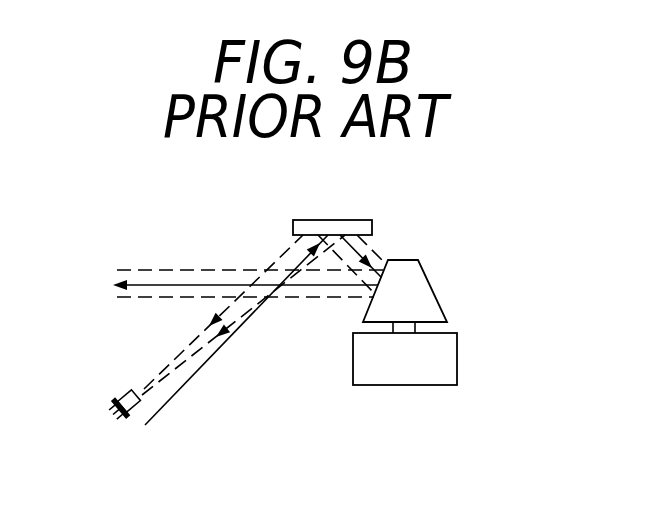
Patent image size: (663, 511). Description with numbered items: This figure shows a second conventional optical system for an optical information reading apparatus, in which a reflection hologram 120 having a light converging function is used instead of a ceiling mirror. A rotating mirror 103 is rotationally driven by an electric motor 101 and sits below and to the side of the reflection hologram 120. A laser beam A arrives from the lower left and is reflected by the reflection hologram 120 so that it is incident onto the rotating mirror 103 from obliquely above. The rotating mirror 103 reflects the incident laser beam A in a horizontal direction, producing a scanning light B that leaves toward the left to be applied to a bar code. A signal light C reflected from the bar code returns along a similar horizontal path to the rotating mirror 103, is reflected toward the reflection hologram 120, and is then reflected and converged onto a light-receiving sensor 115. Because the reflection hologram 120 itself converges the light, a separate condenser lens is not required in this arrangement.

The reflection hologram 120 is at (372, 223).
The rotating mirror 103 is at (438, 300).
The electric motor 101 is at (445, 385).
The light-receiving sensor 115 is at (123, 390).
The laser beam A is at (220, 350).
The scanning light B is at (220, 285).
The signal light C is at (160, 270).